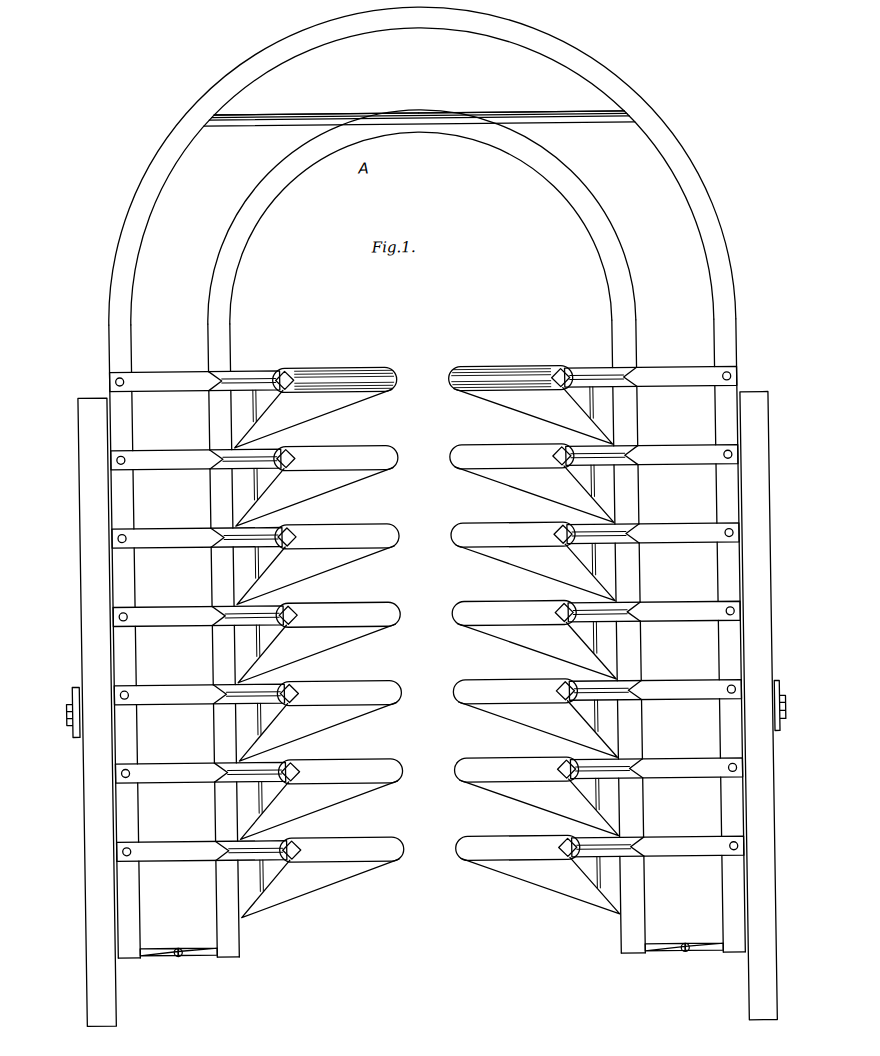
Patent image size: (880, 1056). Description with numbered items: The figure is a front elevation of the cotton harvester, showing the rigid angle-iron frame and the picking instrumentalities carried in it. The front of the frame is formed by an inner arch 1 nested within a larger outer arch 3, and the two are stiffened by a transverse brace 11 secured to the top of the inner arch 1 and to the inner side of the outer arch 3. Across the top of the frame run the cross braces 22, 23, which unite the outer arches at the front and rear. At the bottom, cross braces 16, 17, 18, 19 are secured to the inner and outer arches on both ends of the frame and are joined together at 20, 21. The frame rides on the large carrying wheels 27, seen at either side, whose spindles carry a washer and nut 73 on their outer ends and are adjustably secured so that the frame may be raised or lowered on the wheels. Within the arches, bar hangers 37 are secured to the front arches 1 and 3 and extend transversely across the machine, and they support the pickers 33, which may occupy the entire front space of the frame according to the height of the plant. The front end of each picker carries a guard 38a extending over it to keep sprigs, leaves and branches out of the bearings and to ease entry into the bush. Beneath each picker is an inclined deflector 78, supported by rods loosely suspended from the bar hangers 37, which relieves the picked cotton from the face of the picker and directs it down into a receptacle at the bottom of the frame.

The inner arch 1 is at (444, 134).
The outer arch 3 is at (508, 42).
The transverse brace 11 is at (269, 126).
The cross brace 22 is at (280, 114).
The cross brace 23 is at (552, 115).
The carrying wheel 27 is at (84, 637).
The washer and nut 73 is at (67, 722).
The bar hanger 37 is at (688, 867).
The picker 33 is at (487, 839).
The guard 38a is at (592, 889).
The deflector 78 is at (427, 652).
The cross brace 16 is at (196, 954).
The cross brace 17 is at (131, 954).
The cross brace 18 is at (644, 954).
The cross brace 19 is at (704, 955).
The junction of cross braces 20 is at (171, 946).
The junction of cross braces 21 is at (677, 946).